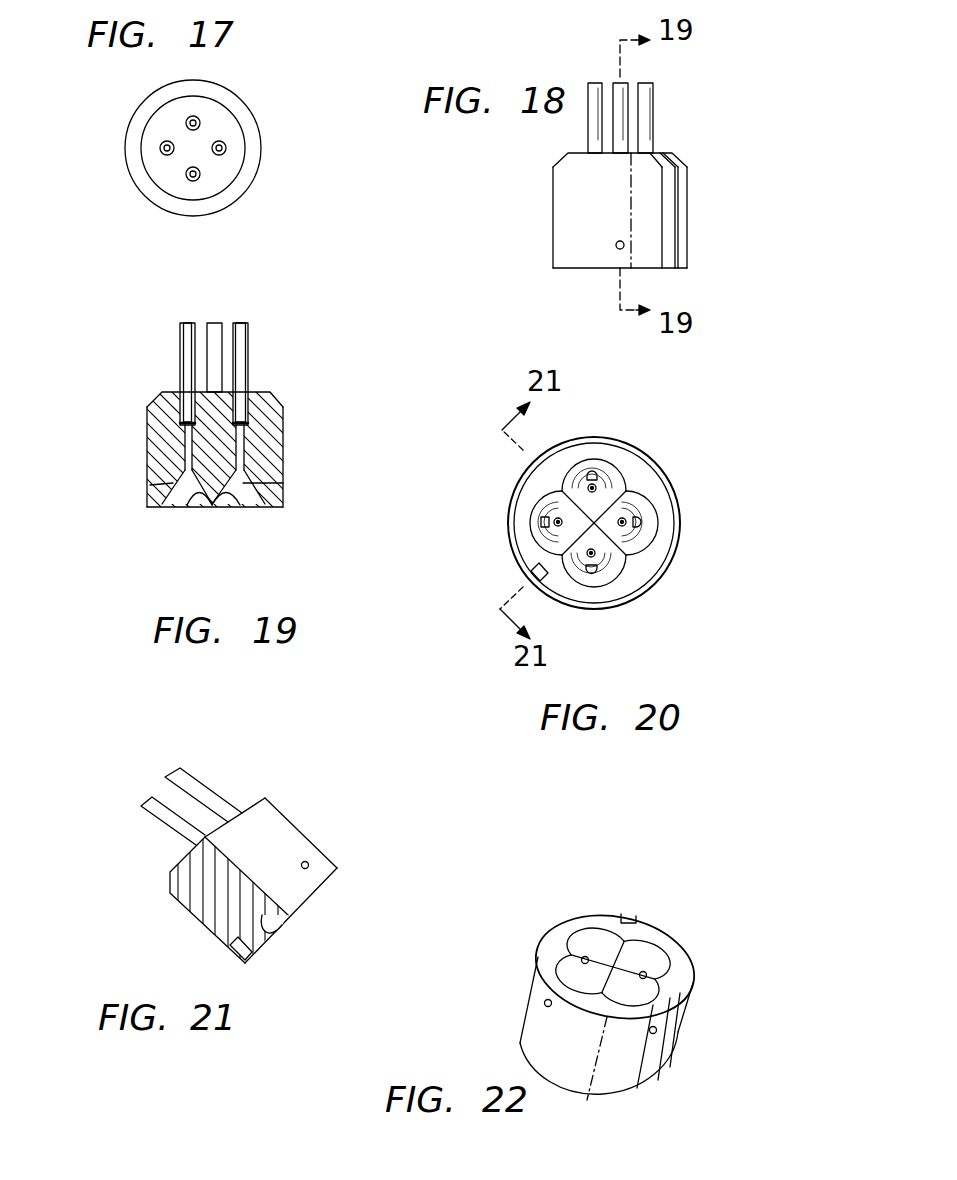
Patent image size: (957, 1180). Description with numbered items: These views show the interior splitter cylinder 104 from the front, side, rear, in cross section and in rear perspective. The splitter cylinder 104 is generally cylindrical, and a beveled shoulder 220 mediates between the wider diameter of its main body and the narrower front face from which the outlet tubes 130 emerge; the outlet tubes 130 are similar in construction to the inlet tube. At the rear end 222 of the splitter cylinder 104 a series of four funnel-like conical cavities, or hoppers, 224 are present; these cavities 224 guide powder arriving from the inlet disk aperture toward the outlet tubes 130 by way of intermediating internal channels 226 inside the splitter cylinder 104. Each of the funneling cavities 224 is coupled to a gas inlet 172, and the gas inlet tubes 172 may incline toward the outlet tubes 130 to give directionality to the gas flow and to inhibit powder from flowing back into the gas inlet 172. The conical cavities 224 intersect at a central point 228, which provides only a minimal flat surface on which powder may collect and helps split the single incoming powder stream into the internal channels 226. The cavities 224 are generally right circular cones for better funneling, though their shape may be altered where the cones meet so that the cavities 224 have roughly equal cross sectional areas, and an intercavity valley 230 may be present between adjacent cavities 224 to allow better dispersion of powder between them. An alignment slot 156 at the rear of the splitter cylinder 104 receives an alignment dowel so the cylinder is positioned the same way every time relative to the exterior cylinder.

In FIG. 17, the splitter cylinder 104 is at (127, 165).
In FIG. 18, the splitter cylinder 104 is at (687, 232).
In FIG. 19, the splitter cylinder 104 is at (297, 443).
In FIG. 21, the splitter cylinder 104 is at (290, 815).
In FIG. 22, the splitter cylinder 104 is at (672, 1063).
In FIG. 17, the outlet tubes 130 is at (226, 148).
In FIG. 18, the outlet tubes 130 is at (653, 105).
In FIG. 19, the outlet tubes 130 is at (248, 343).
In FIG. 21, the outlet tubes 130 is at (197, 782).
In FIG. 20, the alignment slot 156 is at (533, 575).
In FIG. 21, the alignment slot 156 is at (232, 958).
In FIG. 22, the alignment slot 156 is at (628, 915).
In FIG. 18, the gas inlet 172 is at (619, 241).
In FIG. 19, the gas inlet 172 is at (150, 485).
In FIG. 20, the gas inlet 172 is at (591, 476).
In FIG. 21, the gas inlet 172 is at (309, 863).
In FIG. 22, the gas inlet 172 is at (585, 957).
In FIG. 17, the beveled shoulder 220 is at (227, 98).
In FIG. 18, the beveled shoulder 220 is at (680, 157).
In FIG. 19, the beveled shoulder 220 is at (268, 395).
In FIG. 21, the beveled shoulder 220 is at (253, 797).
In FIG. 18, the rear end 222 is at (567, 268).
In FIG. 19, the rear end 222 is at (272, 507).
In FIG. 20, the rear end 222 is at (637, 577).
In FIG. 21, the rear end 222 is at (317, 893).
In FIG. 22, the rear end 222 is at (548, 955).
In FIG. 19, the conical cavities 224 is at (177, 500).
In FIG. 20, the conical cavities 224 is at (573, 458).
In FIG. 22, the conical cavities 224 is at (595, 935).
In FIG. 19, the internal channels 226 is at (243, 452).
In FIG. 20, the internal channels 226 is at (595, 488).
In FIG. 19, the central point 228 is at (213, 507).
In FIG. 20, the central point 228 is at (588, 516).
In FIG. 22, the central point 228 is at (642, 955).
In FIG. 21, the intercavity valley 230 is at (268, 930).